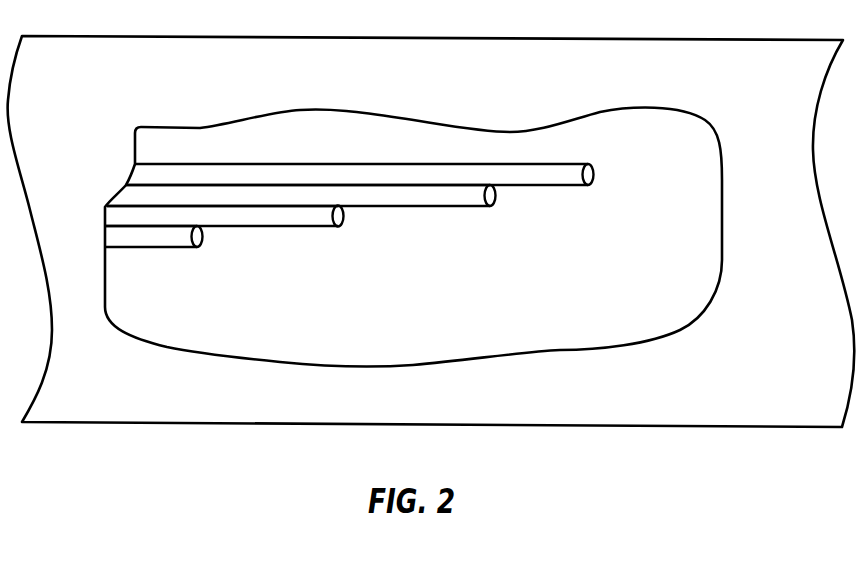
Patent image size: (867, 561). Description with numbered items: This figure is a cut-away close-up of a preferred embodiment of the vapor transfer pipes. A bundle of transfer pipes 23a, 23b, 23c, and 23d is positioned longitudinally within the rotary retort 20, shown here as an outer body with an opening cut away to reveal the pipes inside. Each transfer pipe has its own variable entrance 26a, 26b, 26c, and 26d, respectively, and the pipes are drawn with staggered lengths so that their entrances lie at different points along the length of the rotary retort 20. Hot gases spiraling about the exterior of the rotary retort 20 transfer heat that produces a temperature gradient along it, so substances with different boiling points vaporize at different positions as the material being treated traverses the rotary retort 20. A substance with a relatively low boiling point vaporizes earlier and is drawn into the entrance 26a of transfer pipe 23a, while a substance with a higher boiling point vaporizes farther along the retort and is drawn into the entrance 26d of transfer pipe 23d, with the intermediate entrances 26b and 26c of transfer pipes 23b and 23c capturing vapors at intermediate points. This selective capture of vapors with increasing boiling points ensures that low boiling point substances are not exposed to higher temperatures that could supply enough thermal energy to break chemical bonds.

The rotary retort 20 is at (774, 406).
The transfer pipe 23a is at (556, 177).
The transfer pipe 23b is at (437, 200).
The transfer pipe 23c is at (294, 220).
The transfer pipe 23d is at (126, 239).
The variable entrance 26a is at (592, 167).
The variable entrance 26b is at (494, 204).
The variable entrance 26c is at (342, 225).
The variable entrance 26d is at (201, 244).